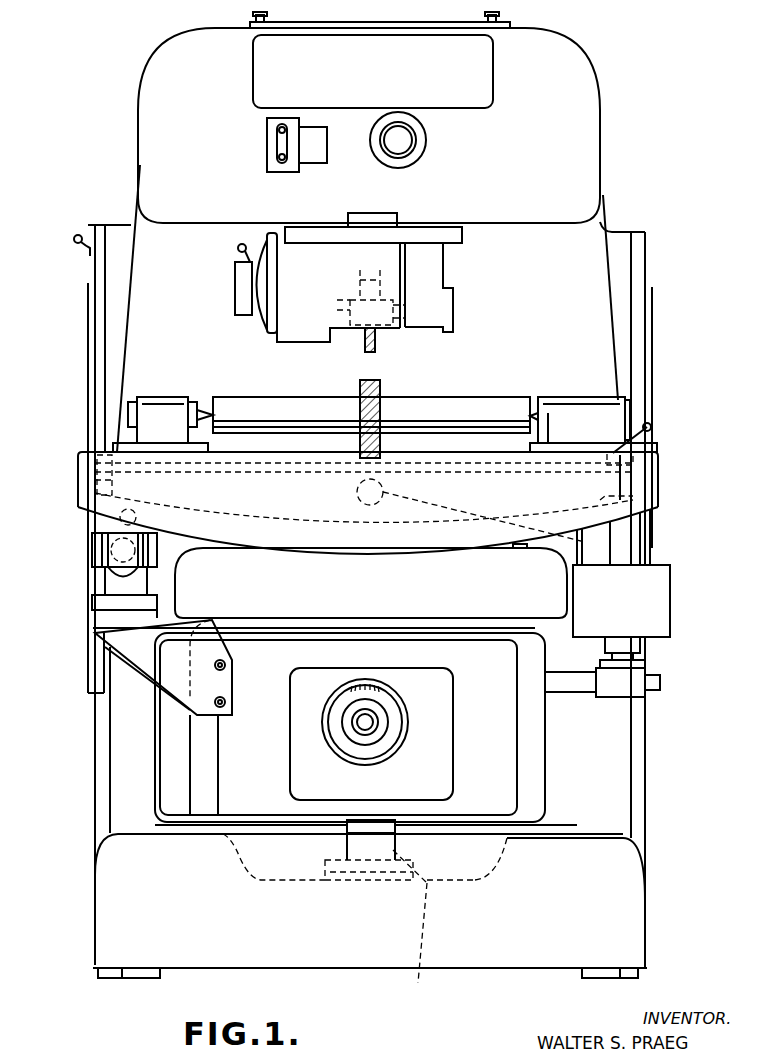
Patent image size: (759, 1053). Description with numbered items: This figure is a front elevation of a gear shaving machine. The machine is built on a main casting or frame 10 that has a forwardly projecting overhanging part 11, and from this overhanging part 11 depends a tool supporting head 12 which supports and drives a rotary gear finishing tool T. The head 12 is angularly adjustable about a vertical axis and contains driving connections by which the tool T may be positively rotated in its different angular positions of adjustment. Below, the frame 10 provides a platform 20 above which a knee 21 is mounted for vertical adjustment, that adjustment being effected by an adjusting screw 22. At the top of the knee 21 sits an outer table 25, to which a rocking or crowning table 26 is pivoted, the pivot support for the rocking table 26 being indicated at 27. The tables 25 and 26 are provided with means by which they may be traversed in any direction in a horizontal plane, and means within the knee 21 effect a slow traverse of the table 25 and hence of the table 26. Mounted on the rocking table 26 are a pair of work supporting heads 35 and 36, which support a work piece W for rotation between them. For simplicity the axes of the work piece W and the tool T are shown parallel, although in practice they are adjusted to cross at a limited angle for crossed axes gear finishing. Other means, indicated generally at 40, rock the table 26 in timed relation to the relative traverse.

The main casting or frame 10 is at (648, 744).
The overhanging part 11 is at (587, 152).
The tool supporting head 12 is at (278, 340).
The platform 20 is at (638, 920).
The knee 21 is at (547, 765).
The adjusting screw 22 is at (365, 921).
The outer table 25 is at (657, 495).
The rocking or crowning table 26 is at (655, 505).
The pivot support 27 is at (653, 545).
The work supporting head 35 is at (167, 390).
The work supporting head 36 is at (568, 397).
The rocking means 40 is at (100, 548).
The rotary gear finishing tool T is at (377, 347).
The work piece W is at (420, 408).